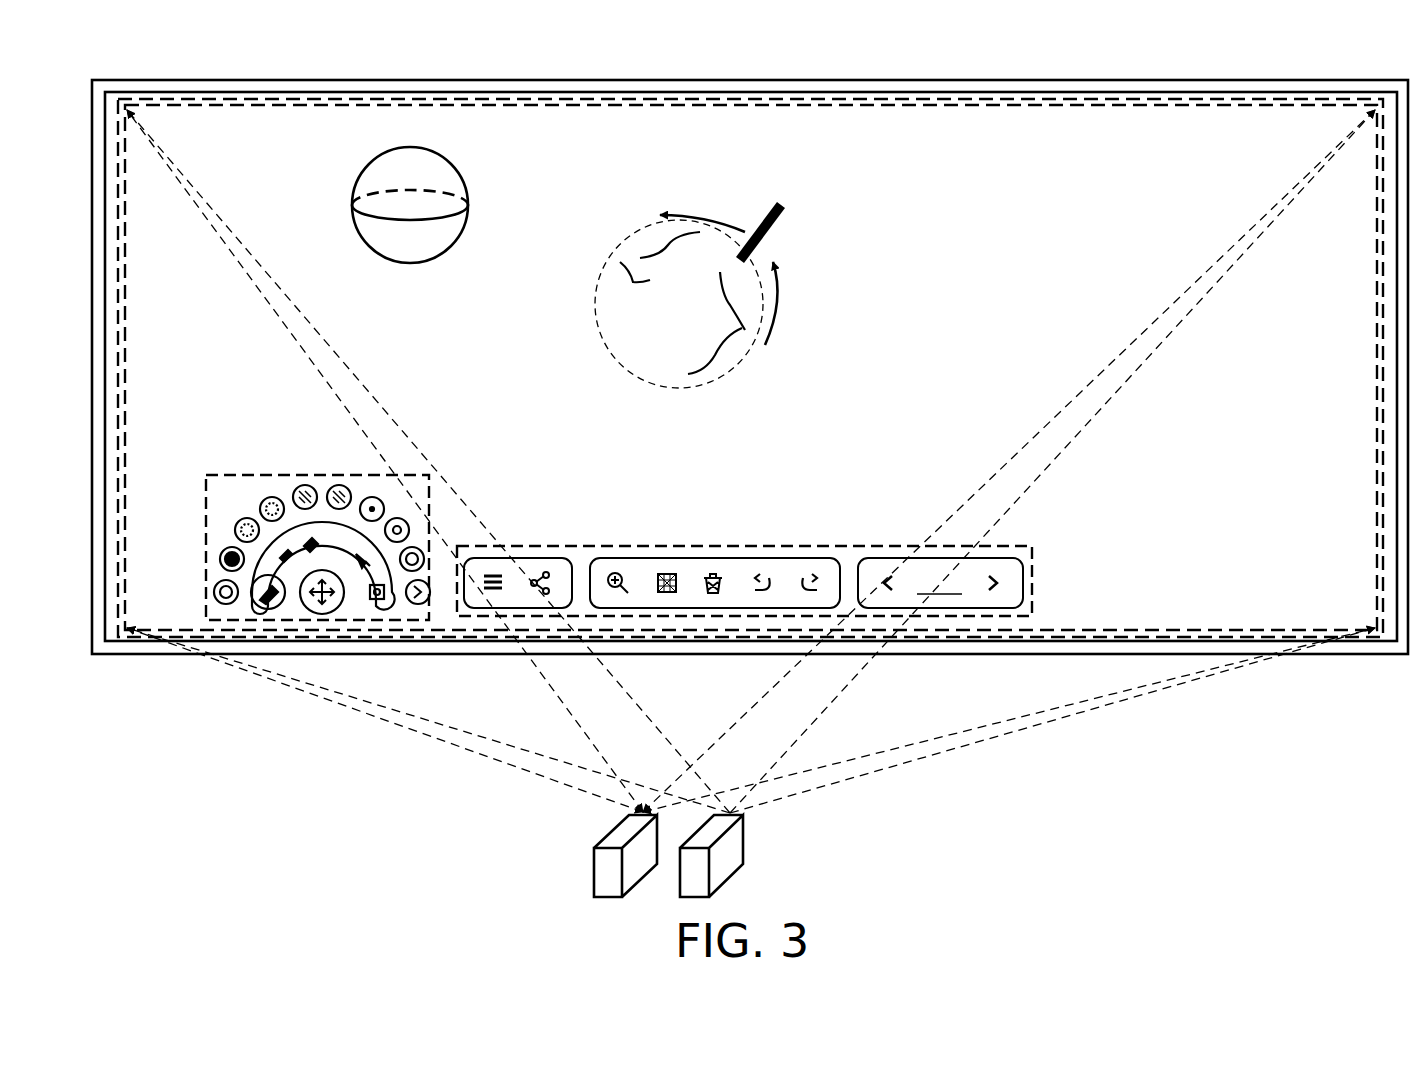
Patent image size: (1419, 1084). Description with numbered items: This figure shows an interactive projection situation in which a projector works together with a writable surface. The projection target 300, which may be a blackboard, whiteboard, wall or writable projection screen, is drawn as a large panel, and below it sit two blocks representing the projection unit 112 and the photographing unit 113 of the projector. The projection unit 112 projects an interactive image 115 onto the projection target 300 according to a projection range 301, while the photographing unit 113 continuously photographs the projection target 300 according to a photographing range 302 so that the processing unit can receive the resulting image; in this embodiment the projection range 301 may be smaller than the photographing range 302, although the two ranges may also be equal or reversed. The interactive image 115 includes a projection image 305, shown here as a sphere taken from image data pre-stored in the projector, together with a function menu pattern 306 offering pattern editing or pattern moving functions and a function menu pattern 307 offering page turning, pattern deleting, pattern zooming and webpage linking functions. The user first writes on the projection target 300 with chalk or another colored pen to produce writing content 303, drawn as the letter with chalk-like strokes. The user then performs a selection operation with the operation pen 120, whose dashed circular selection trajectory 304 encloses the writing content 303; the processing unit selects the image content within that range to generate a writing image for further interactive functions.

The projection target 300 is at (1325, 80).
The projection range 301 is at (1020, 80).
The photographing range 302 is at (1160, 100).
The interactive image 115 is at (875, 126).
The projection image 305 is at (372, 162).
The writing content 303 is at (626, 270).
The selection trajectory 304 is at (735, 370).
The operation pen 120 is at (770, 232).
The function menu pattern 306 is at (269, 475).
The function menu pattern 307 is at (635, 546).
The photographing unit 113 is at (603, 868).
The projection unit 112 is at (732, 848).